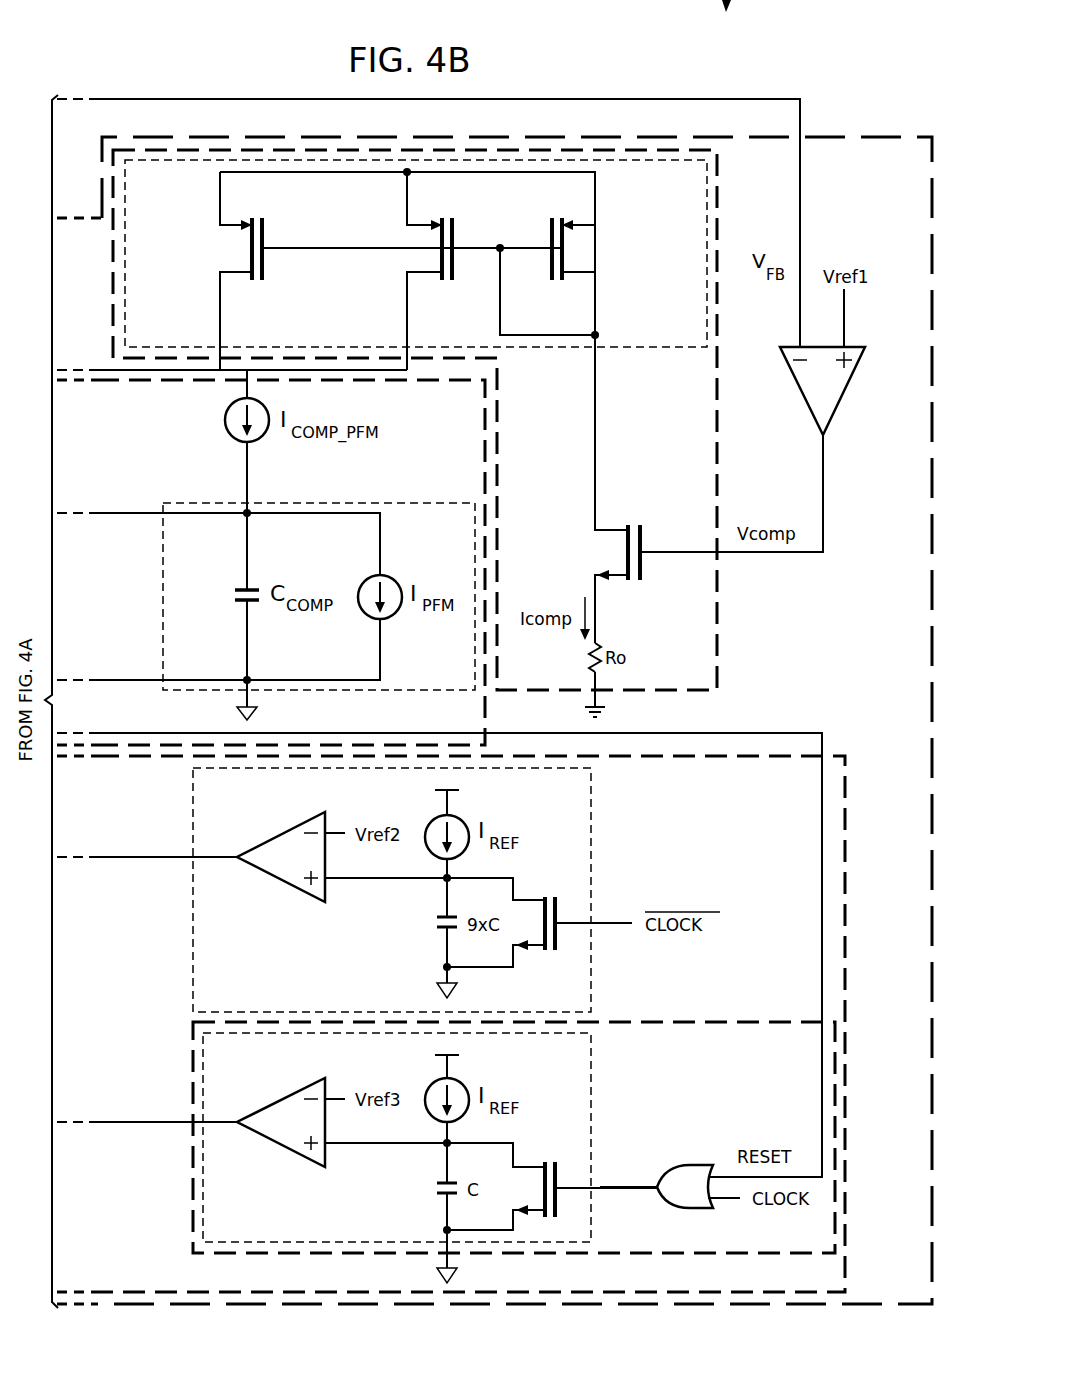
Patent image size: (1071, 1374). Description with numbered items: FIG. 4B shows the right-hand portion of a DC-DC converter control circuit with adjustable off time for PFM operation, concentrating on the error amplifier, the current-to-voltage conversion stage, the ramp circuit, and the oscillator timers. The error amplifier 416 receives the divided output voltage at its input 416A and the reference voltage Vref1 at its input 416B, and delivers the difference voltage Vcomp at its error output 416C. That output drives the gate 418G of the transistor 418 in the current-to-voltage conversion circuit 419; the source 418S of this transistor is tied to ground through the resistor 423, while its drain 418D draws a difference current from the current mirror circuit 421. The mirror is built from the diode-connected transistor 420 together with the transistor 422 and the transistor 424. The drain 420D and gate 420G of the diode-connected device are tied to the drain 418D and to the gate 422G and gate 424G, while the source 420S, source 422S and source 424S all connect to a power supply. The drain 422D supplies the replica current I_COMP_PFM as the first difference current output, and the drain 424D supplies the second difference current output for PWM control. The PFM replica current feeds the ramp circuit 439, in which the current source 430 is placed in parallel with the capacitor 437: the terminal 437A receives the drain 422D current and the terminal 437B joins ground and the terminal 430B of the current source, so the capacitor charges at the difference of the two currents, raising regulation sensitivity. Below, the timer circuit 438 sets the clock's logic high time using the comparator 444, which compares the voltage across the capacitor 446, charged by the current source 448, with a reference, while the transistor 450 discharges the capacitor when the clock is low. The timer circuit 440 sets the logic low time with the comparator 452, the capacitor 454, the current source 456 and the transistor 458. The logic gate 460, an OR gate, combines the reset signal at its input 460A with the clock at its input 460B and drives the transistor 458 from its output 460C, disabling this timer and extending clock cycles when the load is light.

The error amplifier 416 is at (796, 388).
The input of error amplifier 416A is at (783, 347).
The input of error amplifier 416B is at (850, 347).
The error output of error amplifier 416C is at (830, 435).
The transistor 418 is at (645, 565).
The drain of transistor 418 418D is at (595, 520).
The gate of transistor 418 418G is at (648, 552).
The source of transistor 418 418S is at (595, 578).
The current-to-voltage conversion circuit 419 is at (679, 462).
The diode-connected transistor 420 is at (548, 262).
The drain of diode-connected transistor 420 420D is at (595, 282).
The gate of diode-connected transistor 420 420G is at (550, 250).
The source of diode-connected transistor 420 420S is at (595, 222).
The current mirror circuit 421 is at (521, 350).
The transistor 422 is at (458, 262).
The drain of transistor 422 422D is at (407, 282).
The gate of transistor 422 422G is at (458, 250).
The source of transistor 422 422S is at (407, 222).
The resistor 423 is at (590, 655).
The transistor 424 is at (268, 262).
The drain of transistor 424 424D is at (220, 282).
The gate of transistor 424 424G is at (272, 250).
The source of transistor 424 424S is at (220, 222).
The current source 430 is at (368, 578).
The terminal of current source 430 430B is at (388, 618).
The capacitor 437 is at (240, 602).
The terminal of capacitor 437 437A is at (240, 588).
The terminal of capacitor 437 437B is at (257, 603).
The timer circuit 438 is at (600, 822).
The ramp circuit 439 is at (400, 500).
The timer circuit 440 is at (600, 1090).
The comparator 444 is at (280, 883).
The capacitor 446 is at (437, 922).
The current source 448 is at (458, 820).
The transistor 450 is at (558, 896).
The comparator 452 is at (280, 1148).
The capacitor 454 is at (437, 1188).
The current source 456 is at (458, 1085).
The transistor 458 is at (558, 1161).
The logic gate 460 is at (672, 1167).
The input of logic gate 460 460A is at (712, 1170).
The input of logic gate 460 460B is at (718, 1205).
The output of logic gate 460 460C is at (652, 1196).